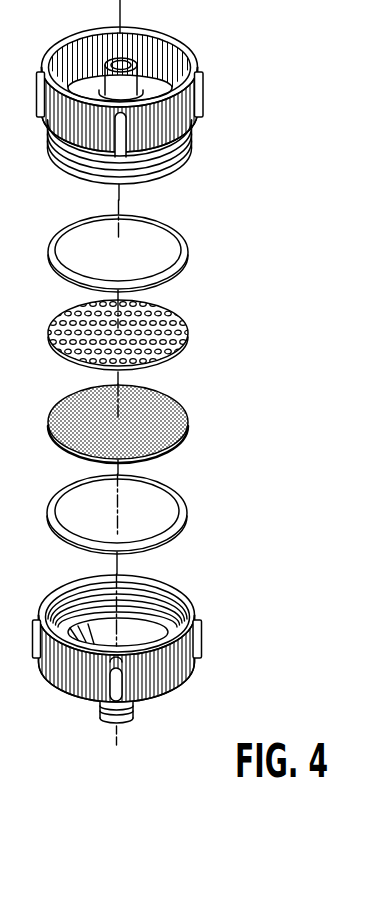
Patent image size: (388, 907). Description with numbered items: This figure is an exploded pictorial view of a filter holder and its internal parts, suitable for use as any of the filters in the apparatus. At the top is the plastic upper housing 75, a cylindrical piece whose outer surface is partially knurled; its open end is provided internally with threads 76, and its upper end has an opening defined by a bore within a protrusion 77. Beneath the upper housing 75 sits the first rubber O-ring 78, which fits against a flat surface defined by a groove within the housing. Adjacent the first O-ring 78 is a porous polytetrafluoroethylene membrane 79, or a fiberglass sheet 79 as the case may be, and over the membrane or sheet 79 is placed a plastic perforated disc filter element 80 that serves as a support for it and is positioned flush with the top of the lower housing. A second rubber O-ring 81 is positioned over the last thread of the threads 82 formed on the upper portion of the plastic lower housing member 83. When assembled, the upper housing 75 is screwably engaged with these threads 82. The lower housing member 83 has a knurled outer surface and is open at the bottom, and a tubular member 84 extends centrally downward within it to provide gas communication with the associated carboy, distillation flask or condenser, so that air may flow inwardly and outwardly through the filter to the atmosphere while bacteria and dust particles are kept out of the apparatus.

The upper housing 75 is at (191, 652).
The threads 76 is at (157, 613).
The protrusion 77 is at (135, 710).
The first O-ring 78 is at (187, 508).
The porous polytetrafluoroethylene membrane 79 is at (187, 413).
The perforated disc filter element 80 is at (187, 322).
The second O-ring 81 is at (187, 251).
The threads 82 is at (186, 150).
The lower housing member 83 is at (191, 100).
The tubular member 84 is at (143, 80).